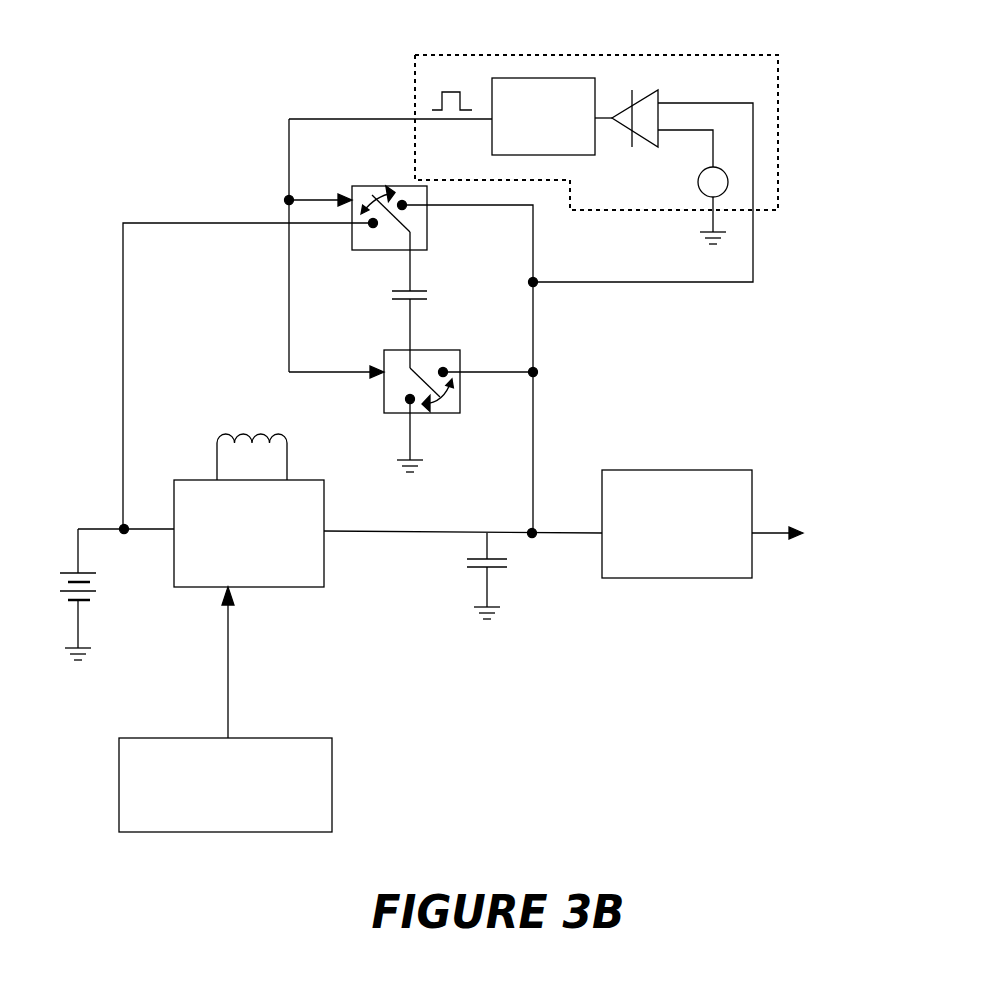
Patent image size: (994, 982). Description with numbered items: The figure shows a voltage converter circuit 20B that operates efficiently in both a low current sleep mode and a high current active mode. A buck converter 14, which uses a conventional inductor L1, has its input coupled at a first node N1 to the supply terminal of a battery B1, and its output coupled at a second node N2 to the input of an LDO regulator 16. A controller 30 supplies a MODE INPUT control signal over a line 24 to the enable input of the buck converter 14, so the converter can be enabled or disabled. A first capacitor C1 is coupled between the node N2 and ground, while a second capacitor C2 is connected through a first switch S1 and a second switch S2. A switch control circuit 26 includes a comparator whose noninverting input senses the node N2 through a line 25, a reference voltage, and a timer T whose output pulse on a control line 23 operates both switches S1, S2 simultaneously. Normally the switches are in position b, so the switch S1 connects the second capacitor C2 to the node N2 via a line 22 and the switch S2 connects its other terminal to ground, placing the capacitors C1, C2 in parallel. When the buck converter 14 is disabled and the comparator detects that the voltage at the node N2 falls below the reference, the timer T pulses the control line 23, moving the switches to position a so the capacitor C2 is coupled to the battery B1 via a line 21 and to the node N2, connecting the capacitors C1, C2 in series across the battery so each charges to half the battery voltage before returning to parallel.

The voltage converter circuit 20B is at (262, 64).
The line 21 is at (198, 222).
The line 22 is at (473, 207).
The control line 23 is at (376, 117).
The line 24 is at (228, 645).
The line 25 is at (753, 240).
The switch control circuit 26 is at (778, 118).
The buck converter 14 is at (249, 533).
The LDO regulator 16 is at (677, 524).
The controller 30 is at (225, 785).
The timer T is at (543, 116).
The switch S1 is at (370, 185).
The switch S2 is at (395, 351).
The first capacitor C1 is at (505, 576).
The second capacitor C2 is at (428, 309).
The inductor L1 is at (252, 443).
The battery B1 is at (60, 594).
The first node N1 is at (124, 528).
The second node N2 is at (535, 531).